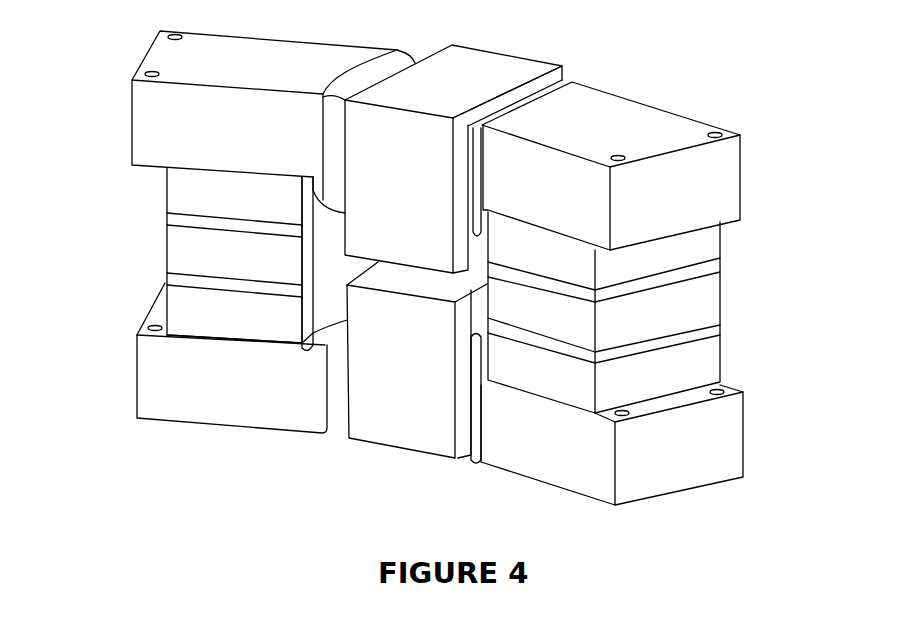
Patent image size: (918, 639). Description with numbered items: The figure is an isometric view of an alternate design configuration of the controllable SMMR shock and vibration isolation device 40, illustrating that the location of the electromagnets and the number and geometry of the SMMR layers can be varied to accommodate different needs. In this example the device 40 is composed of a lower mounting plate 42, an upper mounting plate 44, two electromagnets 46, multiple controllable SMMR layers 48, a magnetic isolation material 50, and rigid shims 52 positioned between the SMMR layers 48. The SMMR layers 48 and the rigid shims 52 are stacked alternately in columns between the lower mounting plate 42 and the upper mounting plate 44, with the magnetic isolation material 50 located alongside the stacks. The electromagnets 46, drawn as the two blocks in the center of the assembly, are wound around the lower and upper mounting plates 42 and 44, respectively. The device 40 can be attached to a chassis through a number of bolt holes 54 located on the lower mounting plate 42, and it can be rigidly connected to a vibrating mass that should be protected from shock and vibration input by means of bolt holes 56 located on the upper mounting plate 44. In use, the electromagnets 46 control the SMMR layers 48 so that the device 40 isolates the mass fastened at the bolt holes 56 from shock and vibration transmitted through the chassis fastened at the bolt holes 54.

The controllable SMMR shock and vibration isolation device 40 is at (697, 80).
The lower mounting plate 42 is at (540, 455).
The upper mounting plate 44 is at (708, 212).
The electromagnet 46 is at (467, 72).
The controllable SMMR layer 48 is at (180, 190).
The magnetic isolation material 50 is at (307, 333).
The rigid shim 52 is at (173, 220).
The bolt hole 54 is at (148, 330).
The bolt hole 56 is at (146, 73).